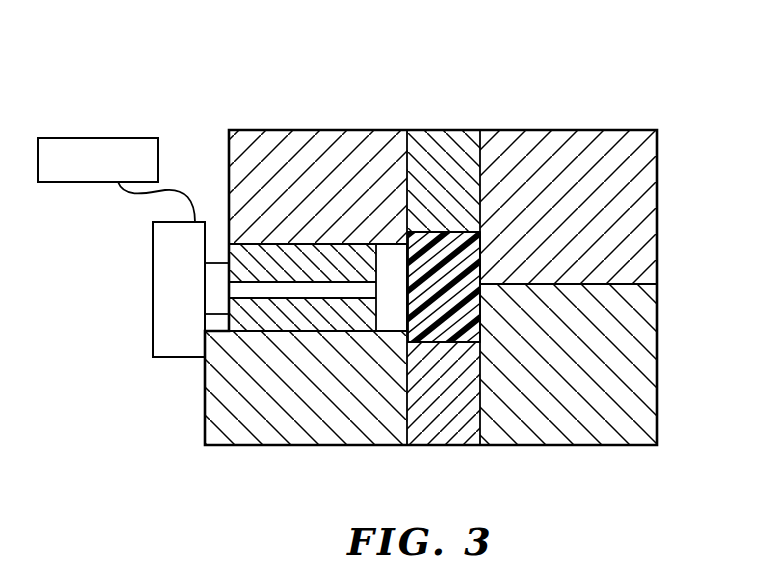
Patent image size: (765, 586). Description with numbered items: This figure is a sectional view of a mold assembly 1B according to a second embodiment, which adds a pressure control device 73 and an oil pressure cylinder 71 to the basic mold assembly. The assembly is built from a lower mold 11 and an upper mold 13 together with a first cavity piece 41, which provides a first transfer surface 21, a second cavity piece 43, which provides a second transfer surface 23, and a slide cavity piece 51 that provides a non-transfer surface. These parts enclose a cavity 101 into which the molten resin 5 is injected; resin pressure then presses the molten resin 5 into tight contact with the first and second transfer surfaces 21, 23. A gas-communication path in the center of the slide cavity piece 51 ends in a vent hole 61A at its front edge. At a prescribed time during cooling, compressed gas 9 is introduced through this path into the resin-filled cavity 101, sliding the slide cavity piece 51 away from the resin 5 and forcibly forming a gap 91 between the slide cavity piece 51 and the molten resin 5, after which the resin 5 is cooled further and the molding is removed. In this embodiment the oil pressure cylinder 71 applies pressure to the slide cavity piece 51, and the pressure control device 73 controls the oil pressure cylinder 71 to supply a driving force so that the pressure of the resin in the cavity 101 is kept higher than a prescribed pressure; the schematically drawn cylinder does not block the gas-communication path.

The mold assembly 1B is at (265, 70).
The molten resin 5 is at (480, 315).
The compressed gas 9 is at (278, 287).
The lower mold 11 is at (645, 348).
The upper mold 13 is at (638, 201).
The first transfer surface 21 is at (453, 343).
The second transfer surface 23 is at (482, 232).
The first cavity piece 41 is at (442, 445).
The second cavity piece 43 is at (447, 130).
The slide cavity piece 51 is at (292, 328).
The vent hole 61A is at (377, 289).
The oil pressure cylinder 71 is at (168, 283).
The pressure control device 73 is at (137, 147).
The gap 91 is at (400, 266).
The cavity 101 is at (432, 231).